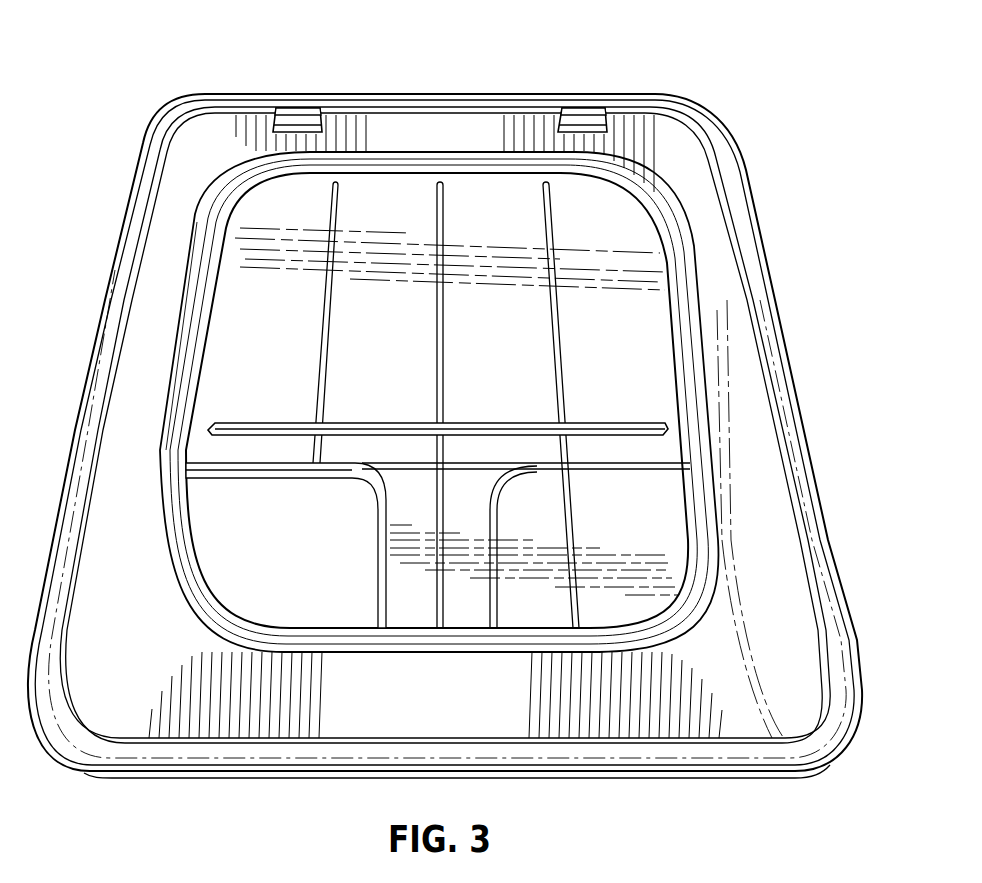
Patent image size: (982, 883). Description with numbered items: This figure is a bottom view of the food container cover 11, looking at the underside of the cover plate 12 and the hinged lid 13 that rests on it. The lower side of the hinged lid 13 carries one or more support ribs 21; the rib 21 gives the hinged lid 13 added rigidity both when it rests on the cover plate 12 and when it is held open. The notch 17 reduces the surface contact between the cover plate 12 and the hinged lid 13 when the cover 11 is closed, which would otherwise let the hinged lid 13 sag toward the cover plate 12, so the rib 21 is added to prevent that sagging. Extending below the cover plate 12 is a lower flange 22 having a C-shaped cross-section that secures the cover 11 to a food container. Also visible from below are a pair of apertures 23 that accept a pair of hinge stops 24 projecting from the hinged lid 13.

The food container cover 11 is at (793, 335).
The cover plate 12 is at (124, 455).
The hinged lid 13 is at (228, 312).
The notch 17 is at (365, 473).
The support rib 21 is at (502, 422).
The lower flange 22 is at (812, 593).
The apertures 23 is at (323, 112).
The hinge stops 24 is at (300, 110).